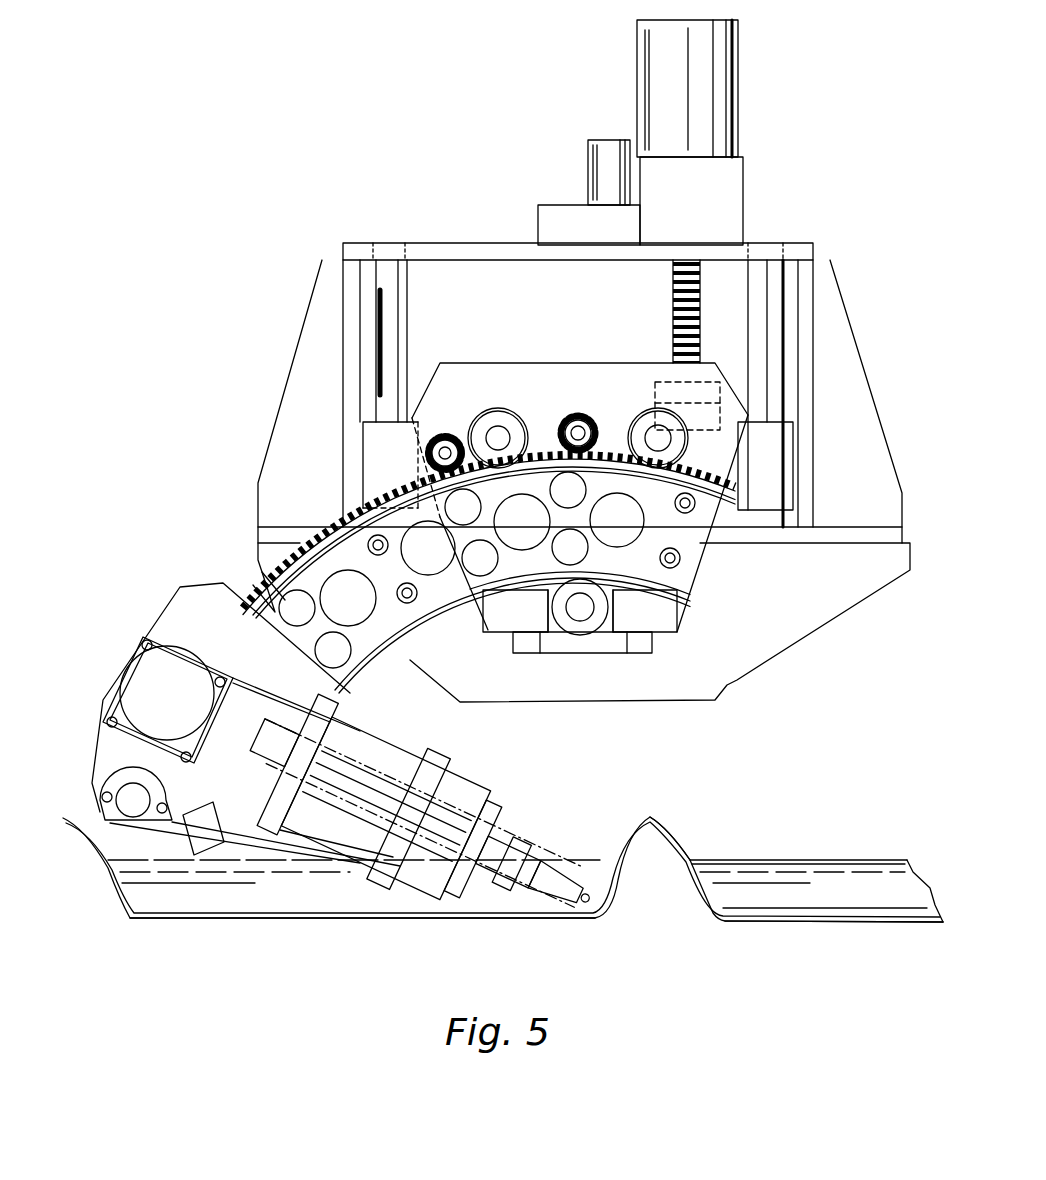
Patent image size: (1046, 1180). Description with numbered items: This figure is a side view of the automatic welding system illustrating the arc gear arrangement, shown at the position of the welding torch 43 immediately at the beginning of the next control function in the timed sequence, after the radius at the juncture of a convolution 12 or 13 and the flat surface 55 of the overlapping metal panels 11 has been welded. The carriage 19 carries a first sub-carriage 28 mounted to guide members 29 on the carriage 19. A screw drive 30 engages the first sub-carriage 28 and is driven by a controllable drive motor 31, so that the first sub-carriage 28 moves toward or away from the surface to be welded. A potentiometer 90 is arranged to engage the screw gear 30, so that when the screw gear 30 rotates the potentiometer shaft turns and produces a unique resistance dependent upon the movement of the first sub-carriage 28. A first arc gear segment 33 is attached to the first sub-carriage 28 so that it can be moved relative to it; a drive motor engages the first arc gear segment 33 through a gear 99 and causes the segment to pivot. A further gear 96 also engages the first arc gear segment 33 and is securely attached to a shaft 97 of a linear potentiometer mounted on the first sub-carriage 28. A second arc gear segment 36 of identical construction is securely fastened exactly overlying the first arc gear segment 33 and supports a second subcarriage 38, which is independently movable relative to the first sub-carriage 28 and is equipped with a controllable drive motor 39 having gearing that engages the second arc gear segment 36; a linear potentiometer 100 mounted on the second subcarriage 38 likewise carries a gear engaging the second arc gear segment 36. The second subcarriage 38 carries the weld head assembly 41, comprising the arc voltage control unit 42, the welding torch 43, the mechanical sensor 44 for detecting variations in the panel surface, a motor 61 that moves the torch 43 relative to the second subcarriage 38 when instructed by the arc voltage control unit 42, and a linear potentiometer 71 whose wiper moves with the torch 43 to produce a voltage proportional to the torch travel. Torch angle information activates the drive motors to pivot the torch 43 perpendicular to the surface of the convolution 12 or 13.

The panels 11 is at (905, 915).
The convolution 12 is at (763, 852).
The convolution 13 is at (627, 850).
The carriage 19 is at (835, 312).
The first sub-carriage 28 is at (476, 362).
The guide members 29 is at (375, 462).
The screw drive 30 is at (700, 290).
The controllable drive motor 31 is at (735, 75).
The first arc gear segment 33 is at (290, 553).
The second arc gear segment 36 is at (692, 572).
The second subcarriage 38 is at (173, 597).
The controllable drive motor 39 is at (140, 678).
The weld head assembly 41 is at (277, 838).
The arc voltage control unit 42 is at (452, 772).
The welding torch 43 is at (510, 880).
The mechanical sensor 44 is at (555, 866).
The flat surface 55 is at (385, 920).
The motor 61 is at (258, 715).
The linear potentiometer 71 is at (375, 870).
The potentiometer 90 is at (608, 140).
The gear 96 is at (437, 436).
The shaft 97 is at (470, 445).
The gear 99 is at (578, 416).
The linear potentiometer 100 is at (130, 790).